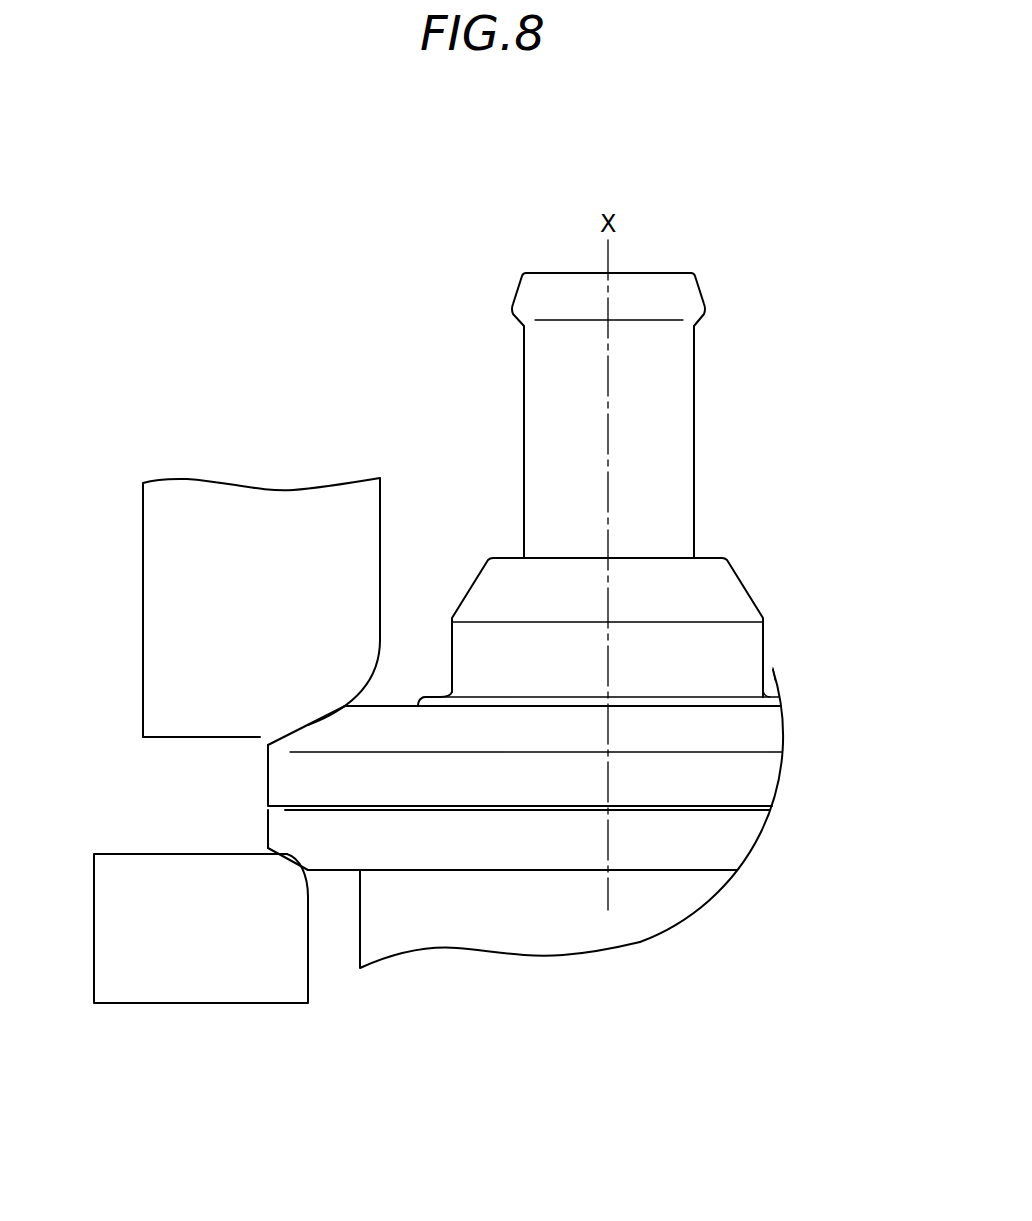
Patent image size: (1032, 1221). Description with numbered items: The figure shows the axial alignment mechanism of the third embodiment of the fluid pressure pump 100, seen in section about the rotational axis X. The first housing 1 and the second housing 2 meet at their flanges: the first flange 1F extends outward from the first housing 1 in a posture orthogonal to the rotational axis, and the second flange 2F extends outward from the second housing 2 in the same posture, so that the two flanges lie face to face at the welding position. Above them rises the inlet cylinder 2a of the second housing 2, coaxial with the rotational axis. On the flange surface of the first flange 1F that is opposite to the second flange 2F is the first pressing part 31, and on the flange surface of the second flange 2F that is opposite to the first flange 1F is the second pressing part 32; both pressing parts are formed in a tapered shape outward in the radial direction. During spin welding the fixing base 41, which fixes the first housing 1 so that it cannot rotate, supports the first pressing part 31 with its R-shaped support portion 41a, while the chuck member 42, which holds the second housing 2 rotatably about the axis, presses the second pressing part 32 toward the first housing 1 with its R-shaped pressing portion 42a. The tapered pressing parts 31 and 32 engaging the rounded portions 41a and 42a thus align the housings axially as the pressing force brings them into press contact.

The fluid pressure pump 100 is at (787, 275).
The first housing 1 is at (367, 928).
The first flange 1F is at (277, 823).
The second housing 2 is at (743, 578).
The inlet cylinder 2a is at (690, 412).
The second flange 2F is at (278, 772).
The first pressing part 31 is at (283, 859).
The second pressing part 32 is at (310, 719).
The fixing base 41 is at (147, 1005).
The support portion 41a is at (288, 857).
The chuck member 42 is at (202, 492).
The pressing portion 42a is at (307, 728).